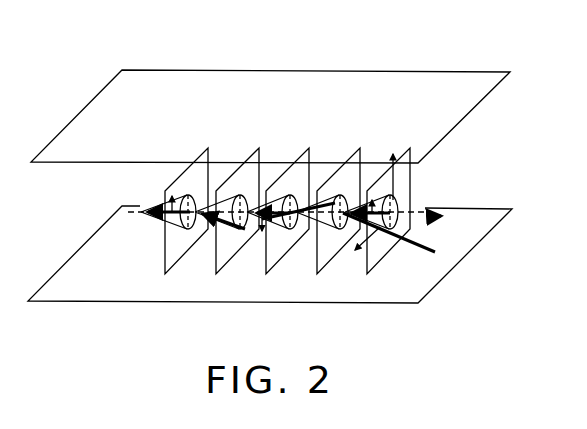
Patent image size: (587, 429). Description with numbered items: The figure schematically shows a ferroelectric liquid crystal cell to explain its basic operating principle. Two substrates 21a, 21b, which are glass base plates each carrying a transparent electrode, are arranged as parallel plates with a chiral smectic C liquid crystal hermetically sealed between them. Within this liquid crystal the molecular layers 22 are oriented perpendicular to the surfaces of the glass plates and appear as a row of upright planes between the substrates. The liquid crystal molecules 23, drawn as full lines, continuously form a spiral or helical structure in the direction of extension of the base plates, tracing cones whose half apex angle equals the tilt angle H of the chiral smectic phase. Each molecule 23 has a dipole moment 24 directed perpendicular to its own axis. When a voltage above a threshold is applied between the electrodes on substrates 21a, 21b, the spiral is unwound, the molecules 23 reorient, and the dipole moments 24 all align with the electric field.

The substrate 21a is at (428, 80).
The substrate 21b is at (478, 210).
The liquid crystal molecular layers 22 is at (400, 187).
The liquid crystal molecules 23 is at (157, 217).
The dipole moment (P⊥) 24 is at (175, 190).
The tilt angle H is at (430, 218).